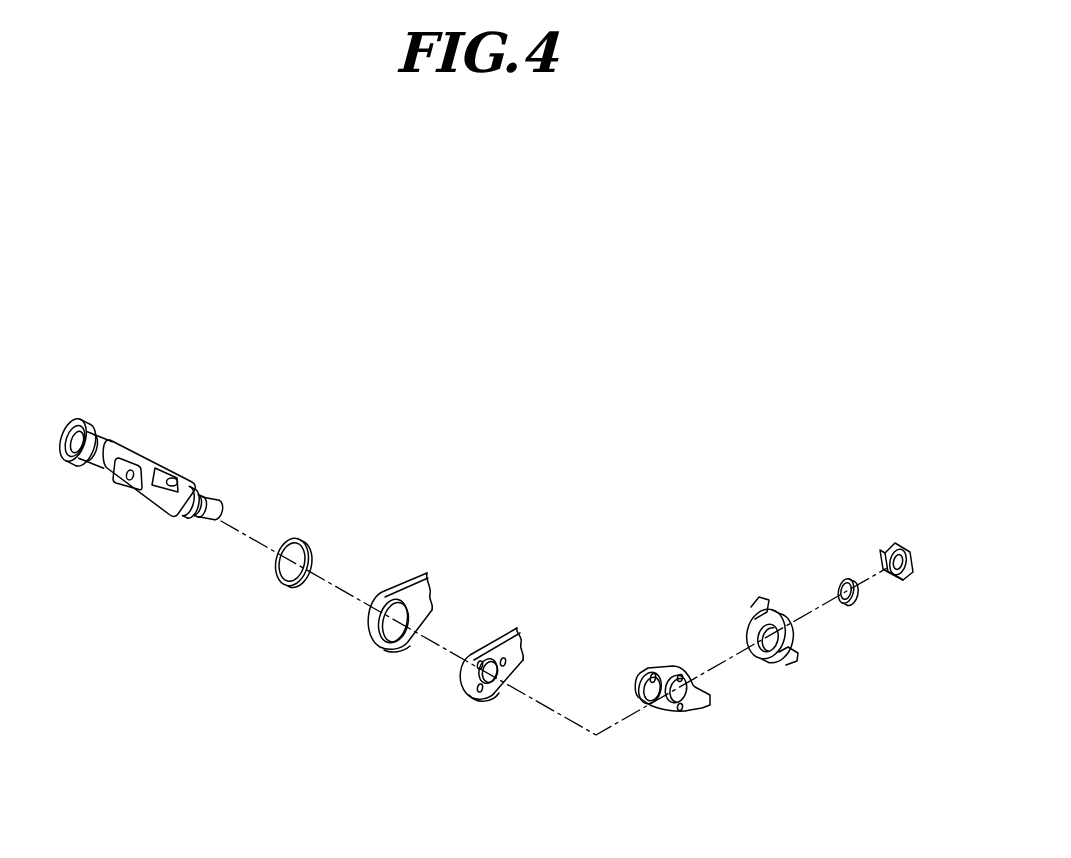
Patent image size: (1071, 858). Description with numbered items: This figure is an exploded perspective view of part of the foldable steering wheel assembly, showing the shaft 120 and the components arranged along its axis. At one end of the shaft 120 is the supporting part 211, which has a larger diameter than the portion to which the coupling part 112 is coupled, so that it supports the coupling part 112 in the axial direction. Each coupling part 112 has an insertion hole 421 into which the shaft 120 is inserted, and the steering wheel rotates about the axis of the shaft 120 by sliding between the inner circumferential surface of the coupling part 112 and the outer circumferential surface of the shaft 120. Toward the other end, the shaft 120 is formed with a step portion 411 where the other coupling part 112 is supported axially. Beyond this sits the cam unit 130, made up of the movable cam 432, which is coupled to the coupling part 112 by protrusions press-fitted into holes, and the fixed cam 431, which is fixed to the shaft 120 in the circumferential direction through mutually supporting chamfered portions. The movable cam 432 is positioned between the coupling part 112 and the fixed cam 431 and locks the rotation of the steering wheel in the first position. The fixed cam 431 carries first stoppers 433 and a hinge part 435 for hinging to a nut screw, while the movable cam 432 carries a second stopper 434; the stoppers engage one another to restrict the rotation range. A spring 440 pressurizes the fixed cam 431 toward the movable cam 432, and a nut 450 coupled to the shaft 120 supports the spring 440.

The coupling part 112 is at (415, 598).
The shaft 120 is at (144, 459).
The cam unit 130 is at (747, 680).
The supporting part 211 is at (72, 417).
The step portion 411 is at (185, 522).
The insertion hole 421 is at (388, 634).
The fixed cam 431 is at (757, 666).
The movable cam 432 is at (673, 716).
The first stoppers 433 is at (753, 605).
The second stopper 434 is at (682, 676).
The hinge part 435 is at (640, 678).
The spring 440 is at (845, 578).
The nut 450 is at (885, 547).